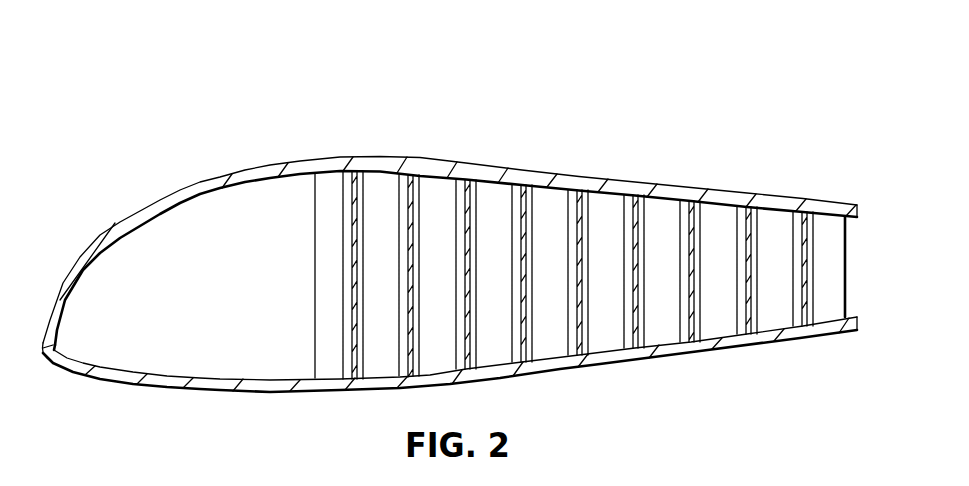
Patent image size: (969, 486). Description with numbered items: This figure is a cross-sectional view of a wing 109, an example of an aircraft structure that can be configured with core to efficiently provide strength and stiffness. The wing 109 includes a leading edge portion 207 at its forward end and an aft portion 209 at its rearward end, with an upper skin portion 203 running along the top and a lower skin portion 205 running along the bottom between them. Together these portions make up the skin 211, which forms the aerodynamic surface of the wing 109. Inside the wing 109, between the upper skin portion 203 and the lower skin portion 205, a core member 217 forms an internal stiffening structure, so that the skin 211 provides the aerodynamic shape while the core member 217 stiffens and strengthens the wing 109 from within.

The wing 109 is at (257, 80).
The upper skin portion 203 is at (580, 163).
The lower skin portion 205 is at (254, 407).
The leading edge portion 207 is at (82, 226).
The aft portion 209 is at (857, 242).
The skin 211 is at (724, 189).
The core member 217 is at (314, 270).